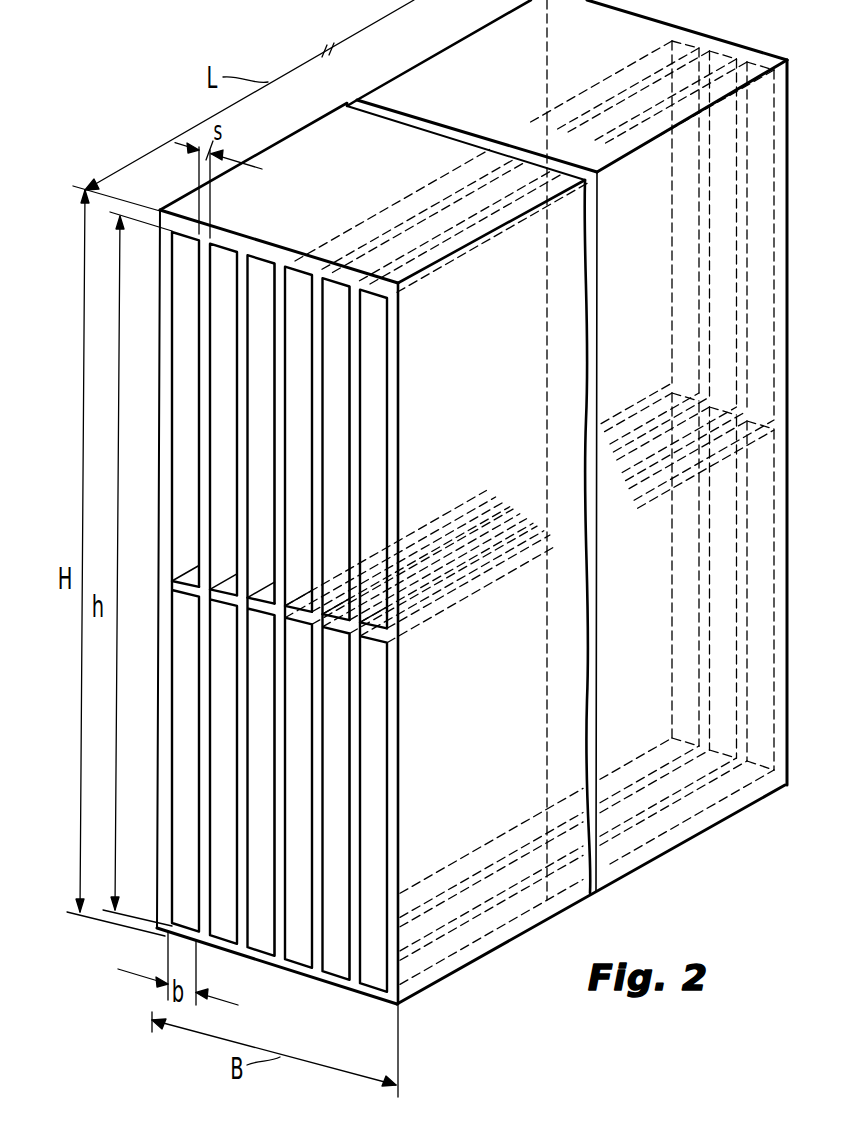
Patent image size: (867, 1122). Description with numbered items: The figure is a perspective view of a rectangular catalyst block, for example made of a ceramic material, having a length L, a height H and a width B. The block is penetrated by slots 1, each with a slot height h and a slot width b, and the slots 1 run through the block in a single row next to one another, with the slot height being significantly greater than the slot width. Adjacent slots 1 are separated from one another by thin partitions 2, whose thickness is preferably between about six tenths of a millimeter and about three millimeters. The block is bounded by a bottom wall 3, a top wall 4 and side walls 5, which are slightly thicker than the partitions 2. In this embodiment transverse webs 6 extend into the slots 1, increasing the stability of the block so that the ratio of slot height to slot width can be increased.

The slots 1 is at (220, 473).
The partitions 2 is at (283, 290).
The bottom wall 3 is at (328, 982).
The top wall 4 is at (308, 263).
The side walls 5 is at (162, 693).
The transverse webs 6 is at (172, 581).